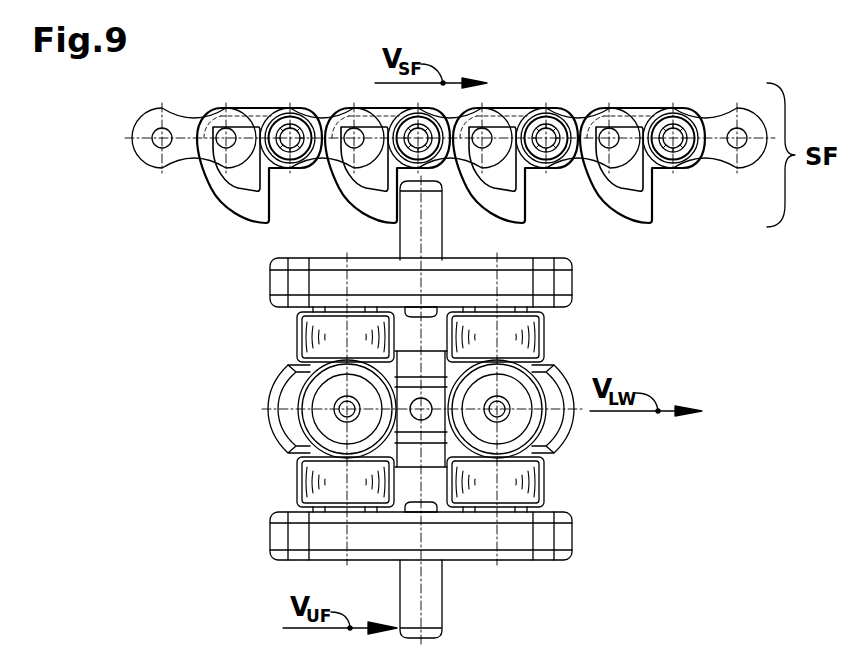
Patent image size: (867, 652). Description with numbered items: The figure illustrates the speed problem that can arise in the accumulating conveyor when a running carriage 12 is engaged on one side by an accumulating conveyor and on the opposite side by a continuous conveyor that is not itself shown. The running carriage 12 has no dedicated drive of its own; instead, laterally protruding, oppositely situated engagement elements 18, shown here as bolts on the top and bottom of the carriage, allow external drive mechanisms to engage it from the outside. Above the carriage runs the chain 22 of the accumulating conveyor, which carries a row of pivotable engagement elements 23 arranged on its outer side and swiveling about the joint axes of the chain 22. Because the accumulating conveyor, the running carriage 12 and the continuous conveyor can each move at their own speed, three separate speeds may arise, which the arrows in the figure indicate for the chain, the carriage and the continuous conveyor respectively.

The running carriage 12 is at (258, 382).
The engagement elements 18 is at (431, 227).
The chain 22 is at (155, 156).
The pivotable engagement elements 23 is at (240, 202).